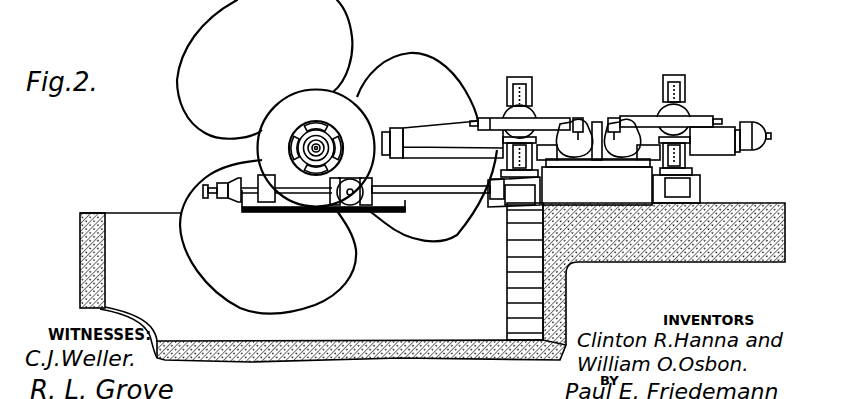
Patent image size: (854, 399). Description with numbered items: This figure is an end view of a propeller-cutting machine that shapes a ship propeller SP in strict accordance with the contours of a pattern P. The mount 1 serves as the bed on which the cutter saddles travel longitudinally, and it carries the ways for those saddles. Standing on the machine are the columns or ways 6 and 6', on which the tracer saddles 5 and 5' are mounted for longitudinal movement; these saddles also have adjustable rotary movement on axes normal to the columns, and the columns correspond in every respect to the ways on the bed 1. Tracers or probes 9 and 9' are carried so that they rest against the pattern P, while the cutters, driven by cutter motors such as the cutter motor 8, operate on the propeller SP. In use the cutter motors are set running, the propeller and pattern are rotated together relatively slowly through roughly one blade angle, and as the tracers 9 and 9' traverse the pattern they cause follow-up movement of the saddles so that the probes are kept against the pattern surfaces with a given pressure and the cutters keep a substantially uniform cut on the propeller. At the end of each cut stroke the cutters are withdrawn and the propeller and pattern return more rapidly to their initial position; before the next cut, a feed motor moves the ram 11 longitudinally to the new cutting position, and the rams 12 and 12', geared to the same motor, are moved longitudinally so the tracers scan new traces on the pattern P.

The mount 1 is at (590, 196).
The tracer saddle 5 is at (691, 153).
The tracer saddle 5' is at (511, 137).
The column 6 is at (688, 82).
The column 6' is at (535, 81).
The cutter motor 8 is at (759, 132).
The tracer 9 is at (622, 123).
The tracer 9' is at (583, 122).
The ram 11 is at (437, 158).
The ram 12 is at (684, 108).
The ram 12' is at (501, 111).
The pattern P is at (406, 157).
The ship propeller SP is at (355, 276).